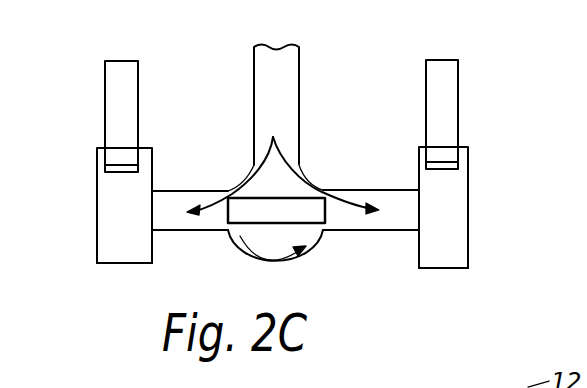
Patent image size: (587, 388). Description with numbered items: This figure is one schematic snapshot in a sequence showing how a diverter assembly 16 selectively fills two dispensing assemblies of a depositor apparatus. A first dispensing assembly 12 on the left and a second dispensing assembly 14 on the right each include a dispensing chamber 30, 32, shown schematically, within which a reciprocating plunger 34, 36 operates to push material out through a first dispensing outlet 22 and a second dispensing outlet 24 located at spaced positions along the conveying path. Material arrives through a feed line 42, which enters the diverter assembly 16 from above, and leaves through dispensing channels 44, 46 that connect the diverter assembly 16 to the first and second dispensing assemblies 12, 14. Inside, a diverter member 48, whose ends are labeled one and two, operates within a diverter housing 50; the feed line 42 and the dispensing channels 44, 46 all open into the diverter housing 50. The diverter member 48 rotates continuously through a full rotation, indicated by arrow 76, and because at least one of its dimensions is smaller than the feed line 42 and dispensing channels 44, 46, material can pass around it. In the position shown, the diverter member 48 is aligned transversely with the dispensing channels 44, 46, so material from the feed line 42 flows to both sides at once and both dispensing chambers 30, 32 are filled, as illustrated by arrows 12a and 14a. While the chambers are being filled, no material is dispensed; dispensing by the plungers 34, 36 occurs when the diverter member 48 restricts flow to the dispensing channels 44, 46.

The first dispensing assembly 12 is at (150, 68).
The arrow 12a is at (262, 166).
The second dispensing assembly 14 is at (470, 73).
The arrow 14a is at (297, 185).
The diverter assembly 16 is at (310, 158).
The first dispensing outlet 22 is at (103, 264).
The second dispensing outlet 24 is at (433, 269).
The dispensing chamber 30 is at (103, 215).
The dispensing chamber 32 is at (470, 192).
The reciprocating plunger 34 is at (105, 118).
The reciprocating plunger 36 is at (459, 130).
The feed line 42 is at (288, 57).
The dispensing channel 44 is at (158, 190).
The dispensing channel 46 is at (343, 190).
The diverter member 48 is at (276, 204).
The diverter housing 50 is at (237, 248).
The arrow 76 is at (292, 262).